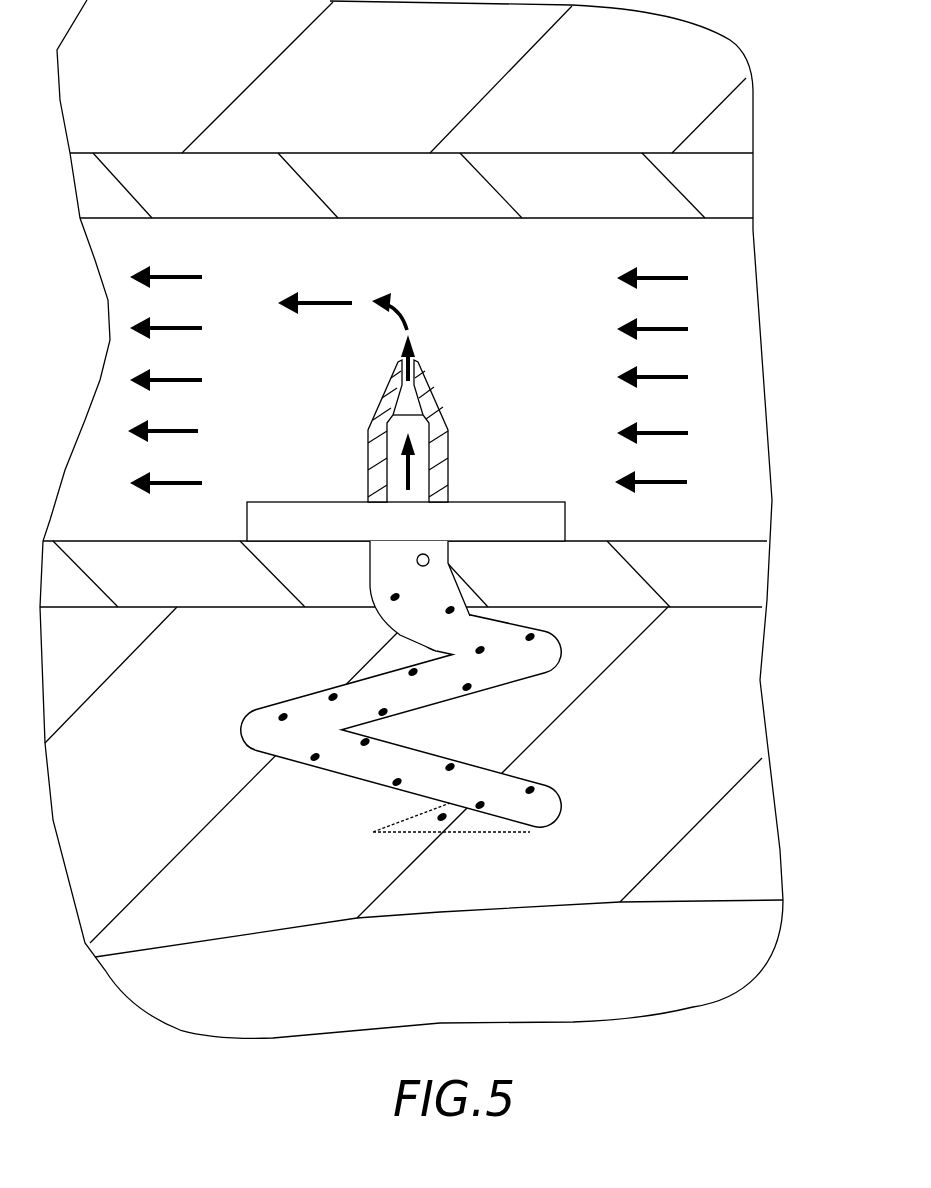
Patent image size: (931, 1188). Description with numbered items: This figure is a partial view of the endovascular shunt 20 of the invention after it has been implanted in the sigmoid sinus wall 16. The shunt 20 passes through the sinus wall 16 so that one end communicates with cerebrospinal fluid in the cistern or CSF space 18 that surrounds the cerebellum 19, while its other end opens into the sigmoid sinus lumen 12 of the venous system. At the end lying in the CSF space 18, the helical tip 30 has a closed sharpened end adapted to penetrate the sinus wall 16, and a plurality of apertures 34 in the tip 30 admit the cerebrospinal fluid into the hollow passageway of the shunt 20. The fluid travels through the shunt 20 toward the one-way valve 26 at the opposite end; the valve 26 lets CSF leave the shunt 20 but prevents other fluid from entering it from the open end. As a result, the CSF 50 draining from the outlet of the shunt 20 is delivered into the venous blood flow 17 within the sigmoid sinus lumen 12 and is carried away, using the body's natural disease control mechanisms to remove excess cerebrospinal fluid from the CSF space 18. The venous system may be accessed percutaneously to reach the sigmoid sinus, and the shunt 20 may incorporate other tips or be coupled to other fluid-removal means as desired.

The sigmoid sinus lumen 12 is at (727, 255).
The sigmoid sinus wall 16 is at (747, 567).
The venous blood flow 17 is at (180, 270).
The CSF space 18 is at (730, 742).
The cerebellum 19 is at (693, 985).
The shunt 20 is at (490, 446).
The one-way valve 26 is at (400, 412).
The helical tip 30 is at (247, 732).
The apertures 34 is at (443, 763).
The CSF 50 is at (397, 305).